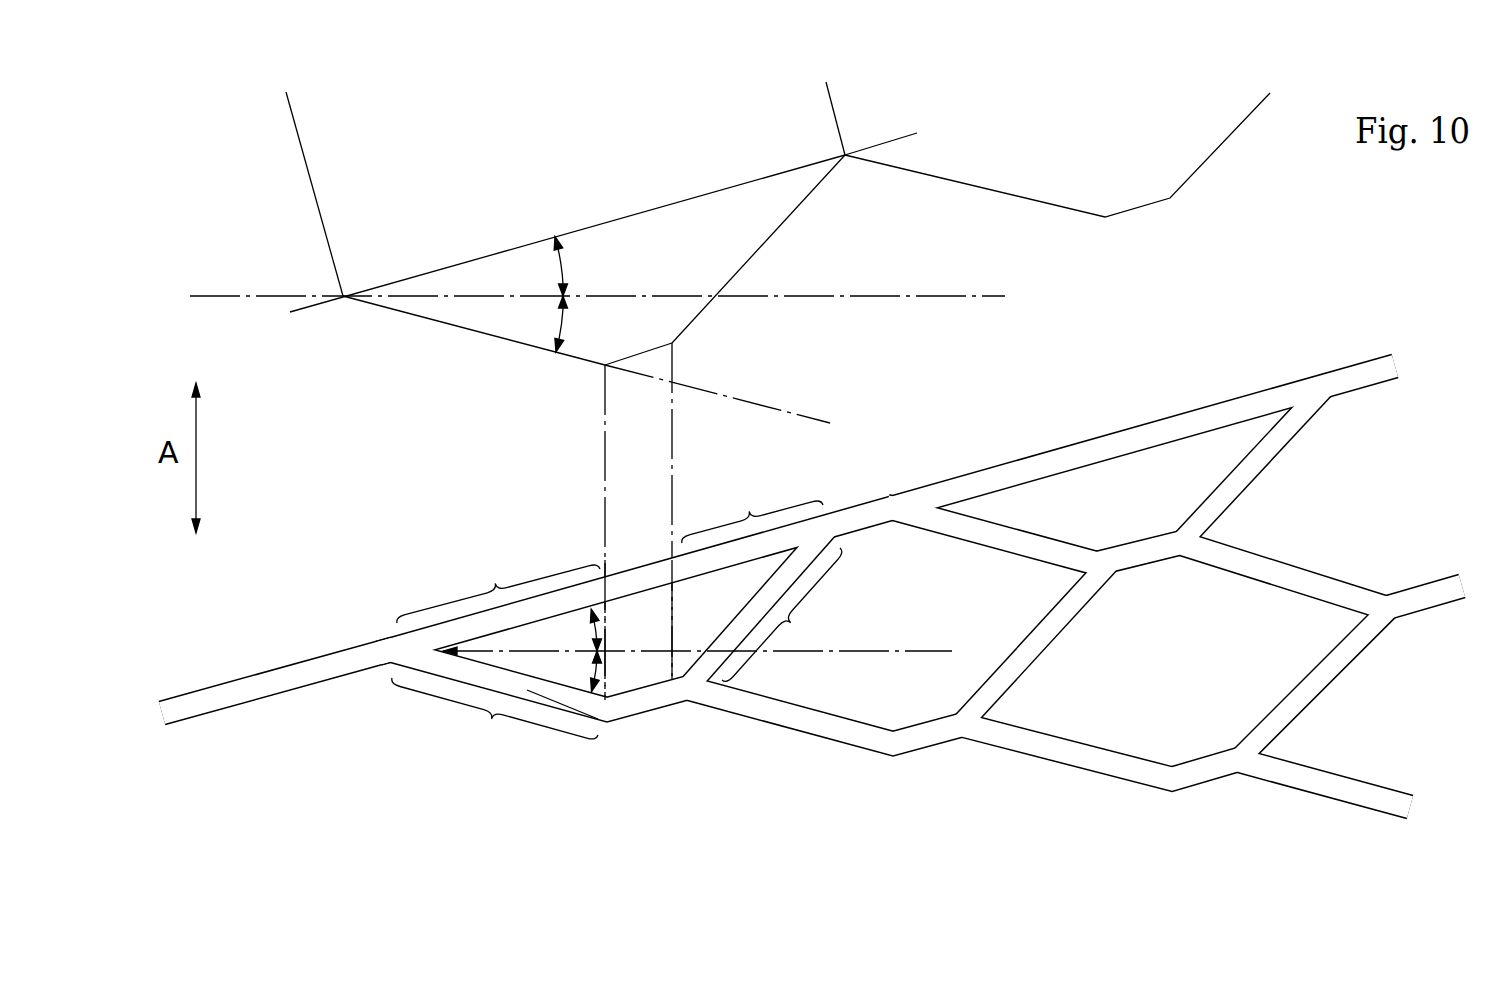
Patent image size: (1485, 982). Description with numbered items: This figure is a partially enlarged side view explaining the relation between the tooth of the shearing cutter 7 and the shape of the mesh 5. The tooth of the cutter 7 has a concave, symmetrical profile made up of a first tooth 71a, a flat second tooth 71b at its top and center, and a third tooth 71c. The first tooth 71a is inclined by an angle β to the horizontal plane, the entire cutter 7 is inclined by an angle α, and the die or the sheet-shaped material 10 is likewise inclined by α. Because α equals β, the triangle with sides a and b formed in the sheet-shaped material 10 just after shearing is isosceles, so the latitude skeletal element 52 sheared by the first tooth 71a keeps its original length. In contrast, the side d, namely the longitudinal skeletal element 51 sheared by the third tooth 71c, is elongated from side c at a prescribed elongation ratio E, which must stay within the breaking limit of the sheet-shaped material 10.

The shearing cutter 7 is at (730, 373).
The first tooth 71a is at (462, 327).
The second tooth 71b is at (647, 350).
The third tooth 71c is at (790, 218).
The sheet-shaped material 10 is at (812, 606).
The mesh 5 is at (812, 633).
The longitudinal skeletal element 51 is at (760, 612).
The latitude skeletal element 52 is at (612, 723).